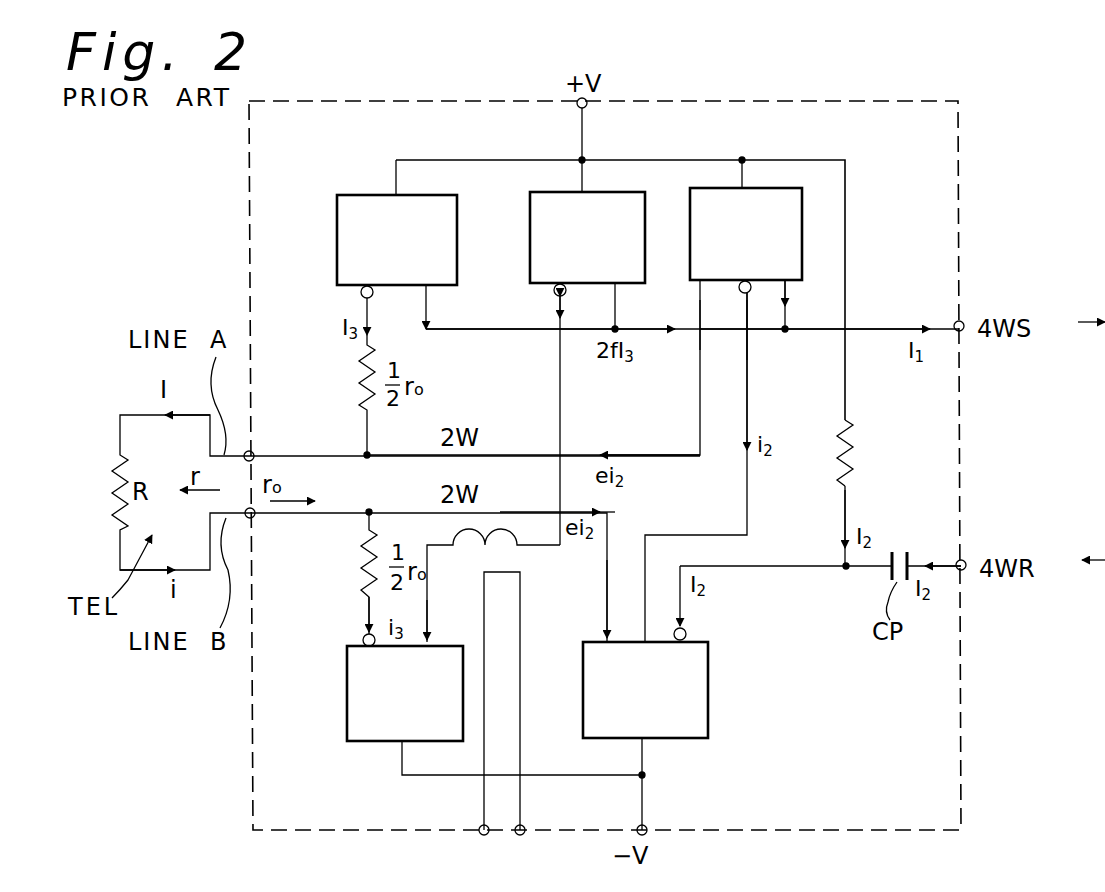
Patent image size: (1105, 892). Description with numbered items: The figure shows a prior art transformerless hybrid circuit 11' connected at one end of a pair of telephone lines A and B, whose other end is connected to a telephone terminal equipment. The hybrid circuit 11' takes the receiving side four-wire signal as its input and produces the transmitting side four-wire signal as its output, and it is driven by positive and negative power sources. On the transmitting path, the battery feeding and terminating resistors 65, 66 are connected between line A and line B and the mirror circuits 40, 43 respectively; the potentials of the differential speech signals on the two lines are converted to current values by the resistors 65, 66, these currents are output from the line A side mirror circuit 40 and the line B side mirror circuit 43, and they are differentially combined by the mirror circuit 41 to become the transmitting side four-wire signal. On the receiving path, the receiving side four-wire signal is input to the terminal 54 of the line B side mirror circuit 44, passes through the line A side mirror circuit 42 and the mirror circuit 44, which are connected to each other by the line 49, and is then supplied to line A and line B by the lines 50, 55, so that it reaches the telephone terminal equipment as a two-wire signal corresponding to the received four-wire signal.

The hybrid circuit 11' is at (605, 446).
The line A side mirror circuit 40 is at (358, 192).
The line A side mirror circuit 41 is at (612, 192).
The line A side mirror circuit 42 is at (780, 188).
The line B side mirror circuit 43 is at (347, 710).
The line B side mirror circuit 44 is at (708, 710).
The line 49 is at (749, 308).
The line 50 is at (717, 325).
The terminal 54 is at (686, 630).
The line 55 is at (612, 517).
The battery feeding and terminating resistor 65 is at (355, 385).
The battery feeding and terminating resistor 66 is at (357, 580).